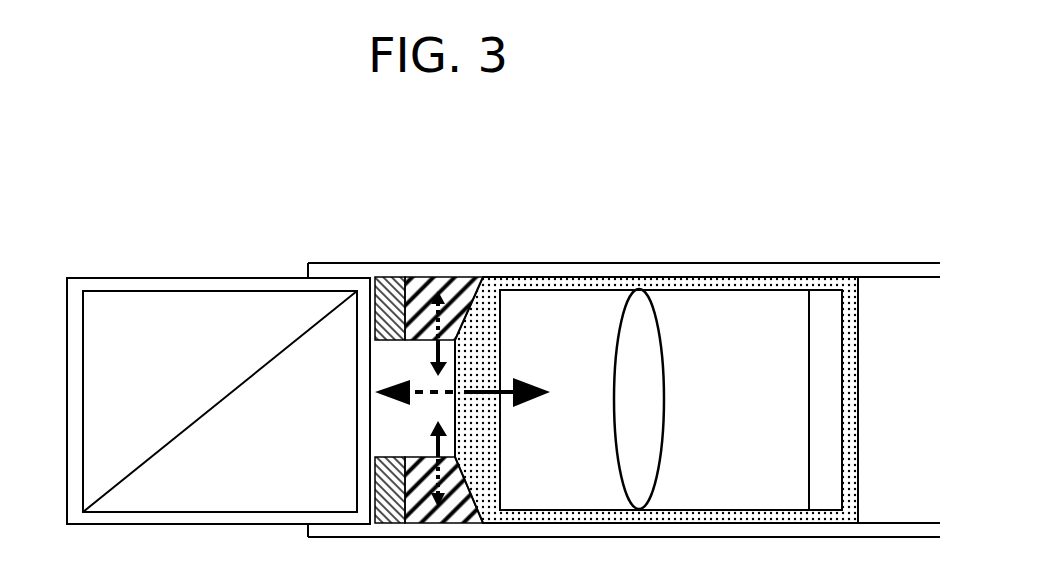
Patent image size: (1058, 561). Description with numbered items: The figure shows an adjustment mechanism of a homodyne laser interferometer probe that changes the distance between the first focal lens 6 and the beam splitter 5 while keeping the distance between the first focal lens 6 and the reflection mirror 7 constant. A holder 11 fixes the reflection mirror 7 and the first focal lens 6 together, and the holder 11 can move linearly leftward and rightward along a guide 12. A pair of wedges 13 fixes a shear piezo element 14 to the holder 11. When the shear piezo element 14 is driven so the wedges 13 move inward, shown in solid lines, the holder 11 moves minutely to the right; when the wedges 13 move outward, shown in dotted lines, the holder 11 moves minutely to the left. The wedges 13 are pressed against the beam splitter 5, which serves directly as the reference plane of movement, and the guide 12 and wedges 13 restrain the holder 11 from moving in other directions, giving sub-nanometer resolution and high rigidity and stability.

The beam splitter 5 is at (215, 277).
The first focal lens 6 is at (623, 303).
The reflection mirror 7 is at (823, 298).
The holder 11 is at (717, 275).
The guide 12 is at (908, 267).
The wedges 13 is at (423, 277).
The shear piezo element 14 is at (387, 277).